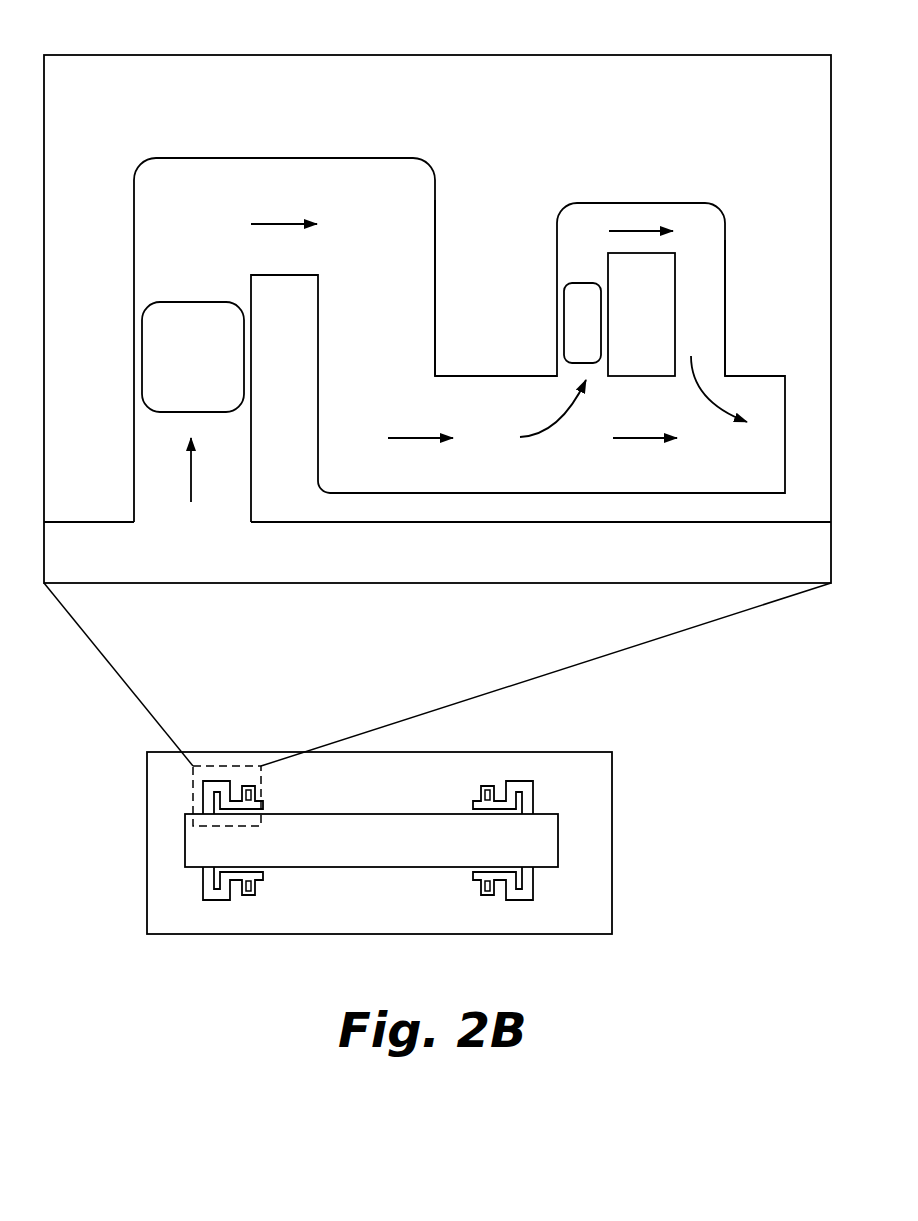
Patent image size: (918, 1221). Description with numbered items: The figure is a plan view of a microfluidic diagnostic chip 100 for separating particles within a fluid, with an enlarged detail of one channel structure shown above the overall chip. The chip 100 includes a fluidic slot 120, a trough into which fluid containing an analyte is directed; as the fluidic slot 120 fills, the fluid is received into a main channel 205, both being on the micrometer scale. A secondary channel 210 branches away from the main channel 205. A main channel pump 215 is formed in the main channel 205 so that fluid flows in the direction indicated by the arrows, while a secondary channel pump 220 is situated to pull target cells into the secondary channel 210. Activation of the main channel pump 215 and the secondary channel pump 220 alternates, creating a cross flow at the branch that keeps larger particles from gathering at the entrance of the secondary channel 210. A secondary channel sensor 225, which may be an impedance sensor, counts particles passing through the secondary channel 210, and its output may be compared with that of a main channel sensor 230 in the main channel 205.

The microfluidic diagnostic chip 100 is at (643, 933).
The fluidic slot 120 is at (247, 548).
The main channel 205 is at (166, 183).
The secondary channel 210 is at (697, 230).
The main channel pump 215 is at (173, 360).
The secondary channel pump 220 is at (582, 323).
The secondary channel sensor 225 is at (733, 298).
The main channel sensor 230 is at (365, 288).